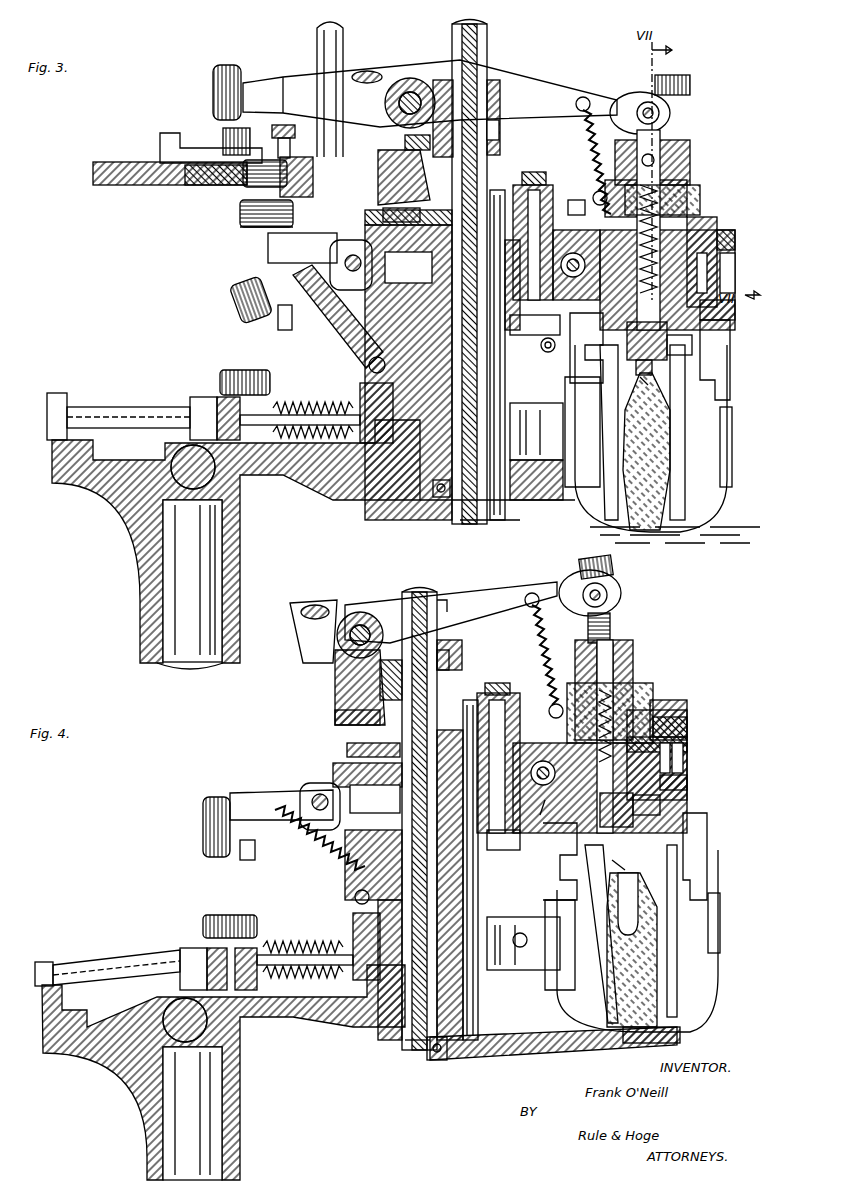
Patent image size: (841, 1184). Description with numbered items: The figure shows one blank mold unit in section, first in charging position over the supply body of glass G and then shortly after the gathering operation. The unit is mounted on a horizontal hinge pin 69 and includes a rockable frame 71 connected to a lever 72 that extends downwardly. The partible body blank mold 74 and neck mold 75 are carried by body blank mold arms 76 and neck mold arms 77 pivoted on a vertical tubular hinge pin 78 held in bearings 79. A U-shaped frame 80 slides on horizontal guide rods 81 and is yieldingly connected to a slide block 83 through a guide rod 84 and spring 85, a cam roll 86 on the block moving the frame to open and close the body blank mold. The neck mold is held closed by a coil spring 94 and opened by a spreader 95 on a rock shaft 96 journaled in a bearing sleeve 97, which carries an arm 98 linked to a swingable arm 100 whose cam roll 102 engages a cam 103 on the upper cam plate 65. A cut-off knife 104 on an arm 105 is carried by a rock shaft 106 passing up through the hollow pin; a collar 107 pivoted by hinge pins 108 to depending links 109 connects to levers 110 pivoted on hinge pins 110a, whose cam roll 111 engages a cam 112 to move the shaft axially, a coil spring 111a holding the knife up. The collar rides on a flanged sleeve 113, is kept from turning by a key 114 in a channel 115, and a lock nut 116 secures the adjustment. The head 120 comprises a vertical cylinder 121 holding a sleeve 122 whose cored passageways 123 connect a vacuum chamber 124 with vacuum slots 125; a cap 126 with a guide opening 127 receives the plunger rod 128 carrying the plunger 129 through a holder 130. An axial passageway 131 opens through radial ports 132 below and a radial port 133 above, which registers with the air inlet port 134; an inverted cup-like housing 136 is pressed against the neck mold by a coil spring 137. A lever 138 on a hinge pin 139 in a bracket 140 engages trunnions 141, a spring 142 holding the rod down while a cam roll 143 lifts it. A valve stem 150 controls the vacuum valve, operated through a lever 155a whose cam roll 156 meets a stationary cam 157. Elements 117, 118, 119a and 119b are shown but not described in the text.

In FIG. 3, the upper cam plate 65 is at (115, 185).
In FIG. 3, the horizontal hinge pin 69 is at (205, 478).
In FIG. 4, the horizontal hinge pin 69 is at (200, 1025).
In FIG. 3, the rockable frame 71 is at (322, 465).
In FIG. 4, the rockable frame 71 is at (297, 1010).
In FIG. 3, the lever 72 is at (210, 618).
In FIG. 4, the lever 72 is at (235, 1162).
In FIG. 3, the body blank mold 74 is at (712, 426).
In FIG. 4, the body blank mold 74 is at (700, 883).
In FIG. 3, the neck mold 75 is at (728, 352).
In FIG. 4, the neck mold 75 is at (705, 840).
In FIG. 3, the body blank mold arms 76 is at (543, 455).
In FIG. 4, the body blank mold arms 76 is at (523, 970).
In FIG. 3, the neck mold arms 77 is at (728, 332).
In FIG. 4, the neck mold arms 77 is at (705, 825).
In FIG. 3, the vertical tubular hinge pin 78 is at (487, 512).
In FIG. 4, the vertical tubular hinge pin 78 is at (415, 1040).
In FIG. 3, the bearings 79 is at (497, 225).
In FIG. 4, the bearings 79 is at (470, 710).
In FIG. 3, the U-shaped frame 80 is at (365, 390).
In FIG. 4, the U-shaped frame 80 is at (355, 925).
In FIG. 3, the horizontal guide rods 81 is at (97, 410).
In FIG. 4, the horizontal guide rods 81 is at (90, 975).
In FIG. 3, the cam actuated slide block 83 is at (213, 400).
In FIG. 4, the cam actuated slide block 83 is at (205, 950).
In FIG. 3, the guide rod 84 is at (318, 410).
In FIG. 4, the guide rod 84 is at (273, 950).
In FIG. 3, the spring 85 is at (290, 402).
In FIG. 4, the spring 85 is at (300, 948).
In FIG. 3, the cam roll 86 is at (237, 378).
In FIG. 4, the cam roll 86 is at (218, 922).
In FIG. 3, the coil spring 94 is at (550, 352).
In FIG. 4, the coil spring 94 is at (517, 941).
In FIG. 3, the spreader 95 is at (535, 325).
In FIG. 4, the spreader 95 is at (503, 840).
In FIG. 3, the vertical rock shaft 96 is at (535, 176).
In FIG. 4, the vertical rock shaft 96 is at (497, 684).
In FIG. 3, the bearing sleeve 97 is at (516, 195).
In FIG. 4, the bearing sleeve 97 is at (510, 715).
In FIG. 3, the arm 98 is at (545, 198).
In FIG. 4, the arm 98 is at (500, 700).
In FIG. 3, the horizontally swingable arm 100 is at (310, 165).
In FIG. 3, the cam roll 102 is at (250, 178).
In FIG. 3, the cam 103 is at (198, 182).
In FIG. 4, the cut-off knife 104 is at (682, 1030).
In FIG. 3, the arm 105 is at (548, 500).
In FIG. 4, the arm 105 is at (548, 1048).
In FIG. 3, the vertical rock shaft 106 is at (443, 500).
In FIG. 4, the vertical rock shaft 106 is at (452, 600).
In FIG. 3, the collar 107 is at (500, 130).
In FIG. 4, the collar 107 is at (455, 680).
In FIG. 4, the hinge pins 108 is at (465, 660).
In FIG. 3, the depending links 109 is at (483, 168).
In FIG. 4, the depending links 109 is at (367, 901).
In FIG. 3, the levers 110 is at (320, 265).
In FIG. 4, the levers 110 is at (250, 808).
In FIG. 3, the hinge pins 110a is at (350, 258).
In FIG. 4, the hinge pins 110a is at (315, 798).
In FIG. 3, the cam roll 111 is at (250, 292).
In FIG. 4, the cam roll 111 is at (210, 808).
In FIG. 3, the coil spring 111a is at (332, 322).
In FIG. 4, the coil spring 111a is at (308, 860).
In FIG. 3, the cam 112 is at (408, 267).
In FIG. 3, the flanged sleeve 113 is at (405, 149).
In FIG. 4, the flanged sleeve 113 is at (333, 720).
In FIG. 3, the key 114 is at (415, 142).
In FIG. 4, the key 114 is at (360, 672).
In FIG. 3, the channel 115 is at (503, 113).
In FIG. 4, the channel 115 is at (375, 695).
In FIG. 3, the lock nut 116 is at (490, 92).
In FIG. 4, the lock nut 116 is at (478, 632).
In FIG. 4, the window 117 is at (375, 799).
In FIG. 3, the bolt 118 is at (385, 215).
In FIG. 4, the bolt 118 is at (350, 750).
In FIG. 3, the roller 119a is at (245, 230).
In FIG. 3, the roller 119b is at (242, 215).
In FIG. 3, the combined gathering blowing head and plunger head 120 is at (675, 256).
In FIG. 4, the combined gathering blowing head and plunger head 120 is at (688, 755).
In FIG. 3, the vertical cylinder 121 is at (728, 270).
In FIG. 4, the vertical cylinder 121 is at (683, 752).
In FIG. 3, the sleeve 122 is at (722, 258).
In FIG. 4, the sleeve 122 is at (680, 765).
In FIG. 3, the cored passageways 123 is at (722, 313).
In FIG. 4, the cored passageways 123 is at (688, 782).
In FIG. 3, the vacuum chamber 124 is at (576, 272).
In FIG. 4, the vacuum chamber 124 is at (533, 740).
In FIG. 3, the vacuum slots 125 is at (592, 395).
In FIG. 4, the vacuum slots 125 is at (600, 880).
In FIG. 3, the cap 126 is at (698, 232).
In FIG. 4, the cap 126 is at (655, 700).
In FIG. 3, the axial vertical guide opening 127 is at (678, 160).
In FIG. 4, the axial vertical guide opening 127 is at (625, 665).
In FIG. 3, the plunger rod 128 is at (691, 88).
In FIG. 4, the plunger rod 128 is at (622, 602).
In FIG. 3, the plunger 129 is at (672, 385).
In FIG. 4, the plunger 129 is at (660, 878).
In FIG. 3, the holder 130 is at (667, 357).
In FIG. 4, the holder 130 is at (690, 798).
In FIG. 3, the axial passageway 131 is at (728, 240).
In FIG. 4, the axial passageway 131 is at (680, 725).
In FIG. 3, the radial ports 132 is at (624, 390).
In FIG. 4, the radial ports 132 is at (602, 865).
In FIG. 3, the radial port 133 is at (702, 195).
In FIG. 4, the radial port 133 is at (650, 685).
In FIG. 3, the air inlet port 134 is at (662, 170).
In FIG. 4, the air inlet port 134 is at (615, 640).
In FIG. 3, the cylindrical inverted cup-like housing 136 is at (637, 362).
In FIG. 4, the cylindrical inverted cup-like housing 136 is at (700, 820).
In FIG. 3, the coil spring 137 is at (700, 215).
In FIG. 4, the coil spring 137 is at (660, 715).
In FIG. 3, the lever 138 is at (548, 94).
In FIG. 4, the lever 138 is at (460, 578).
In FIG. 3, the horizontal hinge pin 139 is at (411, 92).
In FIG. 4, the horizontal hinge pin 139 is at (348, 612).
In FIG. 3, the bracket 140 is at (398, 78).
In FIG. 4, the bracket 140 is at (340, 640).
In FIG. 3, the trunnions 141 is at (670, 115).
In FIG. 4, the trunnions 141 is at (620, 592).
In FIG. 3, the spring 142 is at (592, 160).
In FIG. 4, the spring 142 is at (532, 632).
In FIG. 3, the cam roll 143 is at (212, 84).
In FIG. 3, the valve stem 150 is at (575, 202).
In FIG. 4, the valve stem 150 is at (539, 811).
In FIG. 3, the lever 155a is at (267, 135).
In FIG. 3, the cam roll 156 is at (228, 140).
In FIG. 3, the stationary cam 157 is at (175, 140).
In FIG. 3, the supply body of glass G is at (675, 524).